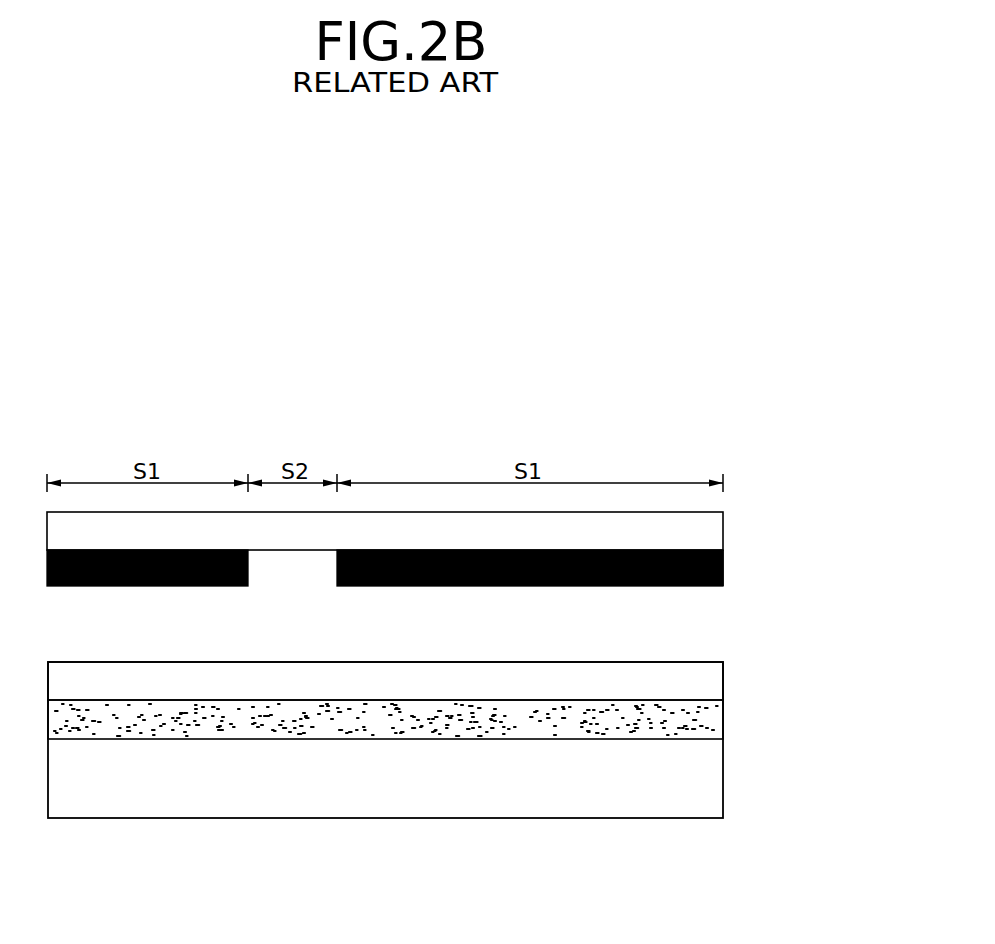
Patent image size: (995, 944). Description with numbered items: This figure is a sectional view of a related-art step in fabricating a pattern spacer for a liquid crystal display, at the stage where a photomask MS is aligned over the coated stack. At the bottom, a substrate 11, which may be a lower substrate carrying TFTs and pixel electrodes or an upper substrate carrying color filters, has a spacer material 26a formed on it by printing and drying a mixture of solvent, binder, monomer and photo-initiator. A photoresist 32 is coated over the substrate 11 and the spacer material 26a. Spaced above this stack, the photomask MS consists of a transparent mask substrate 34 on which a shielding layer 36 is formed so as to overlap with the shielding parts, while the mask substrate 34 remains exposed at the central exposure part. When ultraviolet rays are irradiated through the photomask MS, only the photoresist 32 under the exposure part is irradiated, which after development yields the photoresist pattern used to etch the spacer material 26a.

The substrate 11 is at (723, 782).
The spacer material 26a is at (723, 721).
The photoresist 32 is at (723, 682).
The mask substrate 34 is at (723, 533).
The shielding layer 36 is at (723, 573).
The photomask MS is at (788, 555).